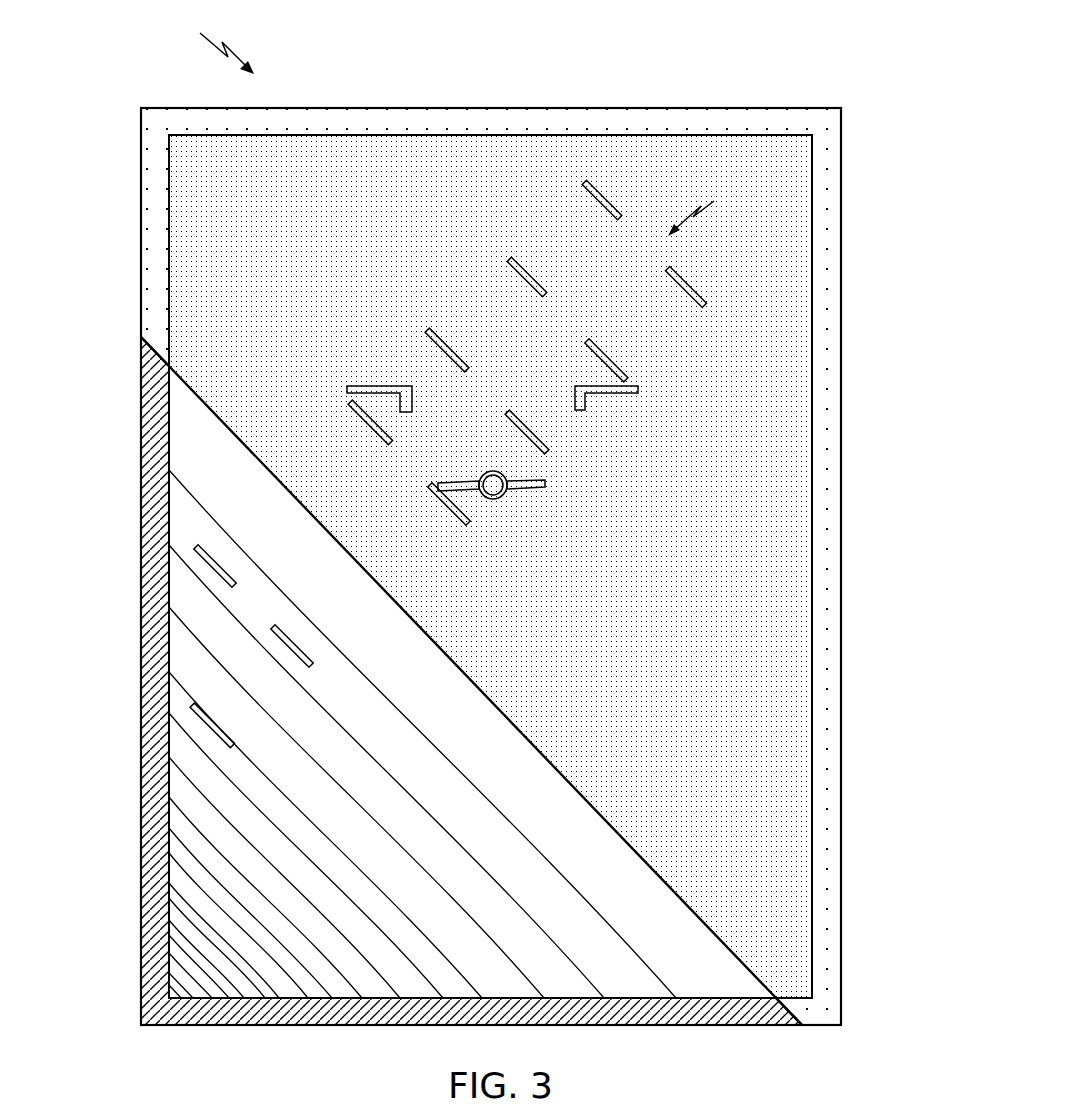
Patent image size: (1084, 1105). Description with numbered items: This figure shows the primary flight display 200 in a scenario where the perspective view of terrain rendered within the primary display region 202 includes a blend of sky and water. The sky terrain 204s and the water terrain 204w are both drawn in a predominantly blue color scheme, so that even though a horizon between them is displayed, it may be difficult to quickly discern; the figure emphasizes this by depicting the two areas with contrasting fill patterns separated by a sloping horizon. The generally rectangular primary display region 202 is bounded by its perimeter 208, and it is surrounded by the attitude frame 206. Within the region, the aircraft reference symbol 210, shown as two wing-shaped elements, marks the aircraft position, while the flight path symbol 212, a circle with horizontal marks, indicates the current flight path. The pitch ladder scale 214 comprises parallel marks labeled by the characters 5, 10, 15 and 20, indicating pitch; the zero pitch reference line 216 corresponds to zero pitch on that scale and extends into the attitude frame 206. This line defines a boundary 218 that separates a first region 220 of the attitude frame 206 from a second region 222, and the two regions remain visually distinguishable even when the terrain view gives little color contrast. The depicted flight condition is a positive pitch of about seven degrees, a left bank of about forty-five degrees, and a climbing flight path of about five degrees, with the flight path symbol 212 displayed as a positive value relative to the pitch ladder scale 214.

The primary flight display 200 is at (209, 41).
The primary display region 202 is at (196, 198).
The rendered sky terrain 204s is at (708, 584).
The rendered water terrain 204w is at (452, 877).
The attitude frame 206 is at (543, 108).
The perimeter 208 is at (342, 137).
The aircraft reference symbol 210 is at (360, 386).
The flight path symbol 212 is at (500, 497).
The pitch ladder scale 214 is at (711, 206).
The zero pitch reference line 216 is at (529, 741).
The boundary 218 is at (163, 350).
The first region 220 is at (398, 120).
The second region 222 is at (152, 520).
The 5 unit fastener bar 5 is at (412, 516).
The 10 unit fastener bar 10 is at (384, 536).
The 15 unit fastener bar 15 is at (507, 260).
The 20 unit fastener bar 20 is at (637, 250).